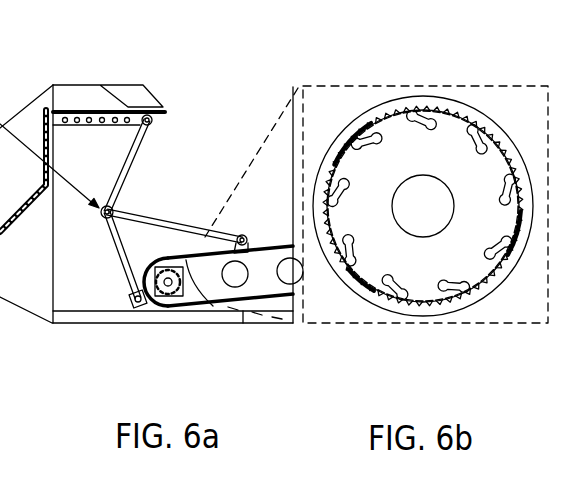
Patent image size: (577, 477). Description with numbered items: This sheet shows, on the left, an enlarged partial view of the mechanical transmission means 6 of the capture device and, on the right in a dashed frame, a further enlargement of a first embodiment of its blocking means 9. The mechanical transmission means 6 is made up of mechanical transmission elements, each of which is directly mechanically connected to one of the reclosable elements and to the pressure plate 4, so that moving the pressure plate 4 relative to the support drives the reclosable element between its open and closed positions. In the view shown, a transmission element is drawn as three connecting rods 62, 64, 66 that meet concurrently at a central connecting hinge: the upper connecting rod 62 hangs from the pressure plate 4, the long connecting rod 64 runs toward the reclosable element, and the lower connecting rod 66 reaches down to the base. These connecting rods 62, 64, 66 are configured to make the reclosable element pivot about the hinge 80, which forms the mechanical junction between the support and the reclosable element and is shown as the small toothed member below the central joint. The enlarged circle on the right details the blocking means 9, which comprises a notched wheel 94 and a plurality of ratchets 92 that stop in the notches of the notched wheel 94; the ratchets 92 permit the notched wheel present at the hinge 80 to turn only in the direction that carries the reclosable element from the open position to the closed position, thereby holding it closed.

In FIG. 6A, the pressure plate 4 is at (125, 85).
In FIG. 6A, the mechanical transmission means 6 is at (152, 173).
In FIG. 6A, the connecting rod 62 is at (125, 162).
In FIG. 6A, the connecting rod 64 is at (175, 222).
In FIG. 6A, the connecting rod 66 is at (120, 258).
In FIG. 6A, the hinge 80 is at (170, 296).
In FIG. 6B, the blocking means 9 is at (509, 123).
In FIG. 6B, the ratchet 92 is at (425, 113).
In FIG. 6B, the notched wheel 94 is at (462, 123).